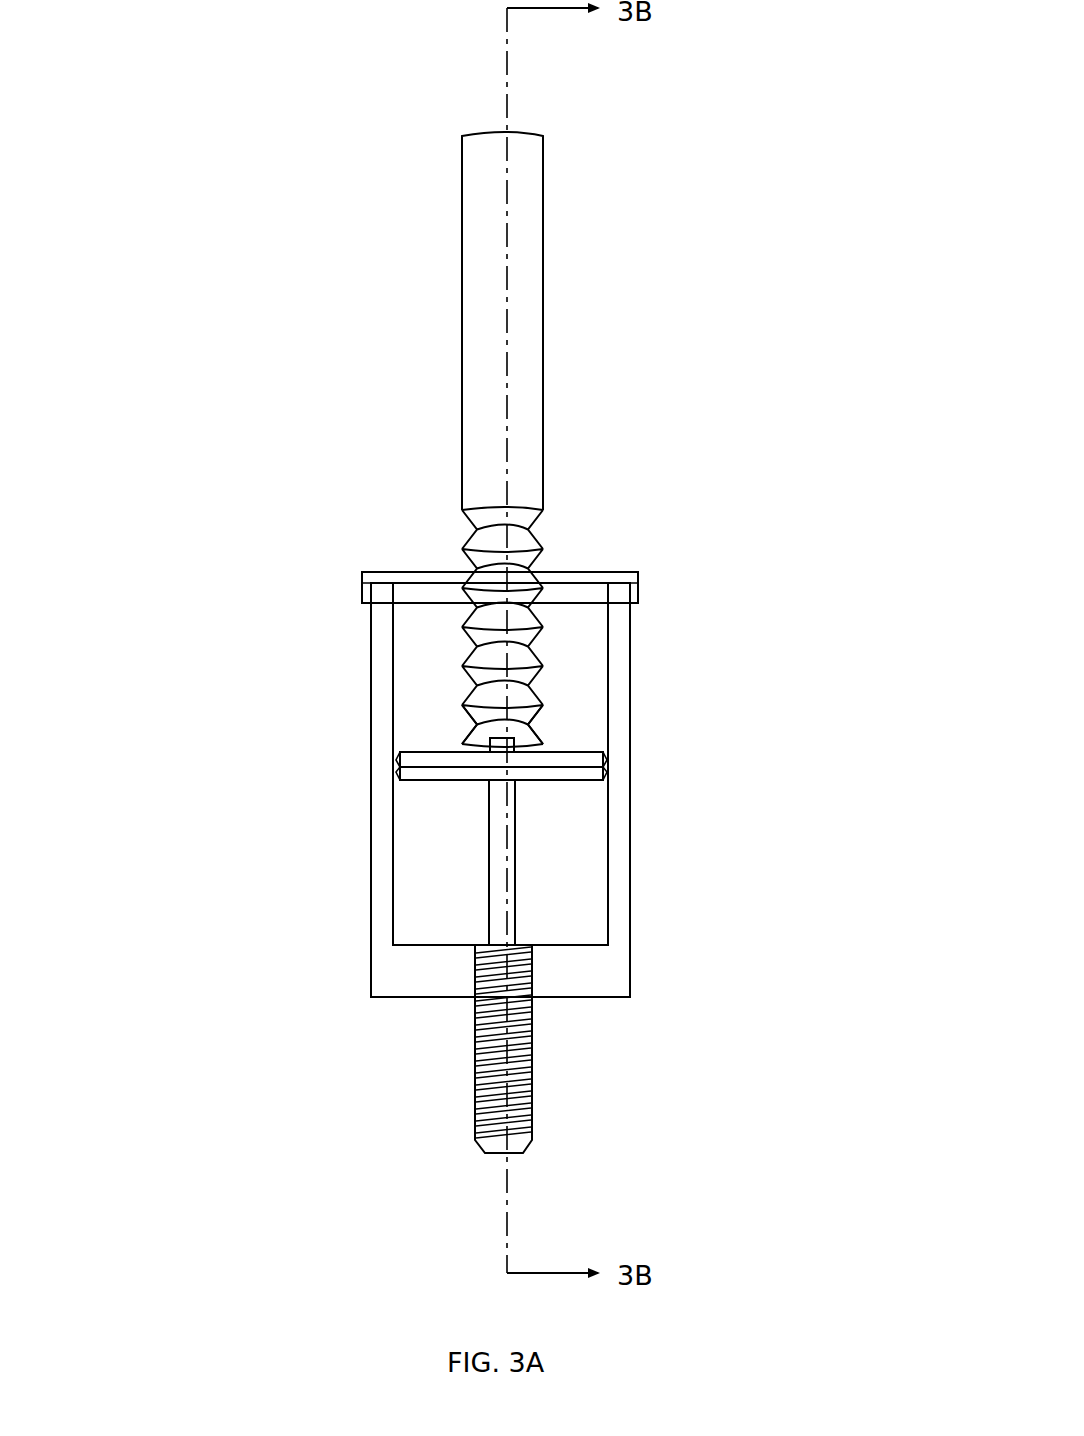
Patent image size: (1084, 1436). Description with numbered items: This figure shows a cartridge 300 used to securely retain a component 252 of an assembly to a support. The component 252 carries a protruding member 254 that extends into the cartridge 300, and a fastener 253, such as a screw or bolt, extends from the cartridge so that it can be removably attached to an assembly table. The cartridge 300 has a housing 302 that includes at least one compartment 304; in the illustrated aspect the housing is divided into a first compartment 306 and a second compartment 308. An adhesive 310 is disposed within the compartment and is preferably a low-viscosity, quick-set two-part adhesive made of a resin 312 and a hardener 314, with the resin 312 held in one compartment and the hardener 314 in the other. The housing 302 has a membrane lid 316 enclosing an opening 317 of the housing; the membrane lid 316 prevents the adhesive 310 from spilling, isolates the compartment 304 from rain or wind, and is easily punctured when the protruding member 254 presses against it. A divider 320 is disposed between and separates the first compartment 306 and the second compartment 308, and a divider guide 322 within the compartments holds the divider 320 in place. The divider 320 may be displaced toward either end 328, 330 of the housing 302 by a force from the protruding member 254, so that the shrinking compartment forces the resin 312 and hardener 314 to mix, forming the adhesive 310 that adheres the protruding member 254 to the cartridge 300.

The cartridge 300 is at (338, 80).
The component 252 is at (525, 292).
The fastener 253 is at (525, 1062).
The protruding member 254 is at (465, 627).
The housing 302 is at (371, 879).
The compartment 304 is at (370, 758).
The first compartment 306 is at (430, 672).
The second compartment 308 is at (430, 840).
The adhesive 310 is at (577, 710).
The resin 312 is at (583, 660).
The hardener 314 is at (557, 873).
The membrane lid 316 is at (410, 572).
The opening 317 is at (572, 594).
The divider 320 is at (455, 782).
The divider guide 322 is at (502, 825).
The end of housing 328 is at (695, 556).
The end of housing 330 is at (400, 1003).